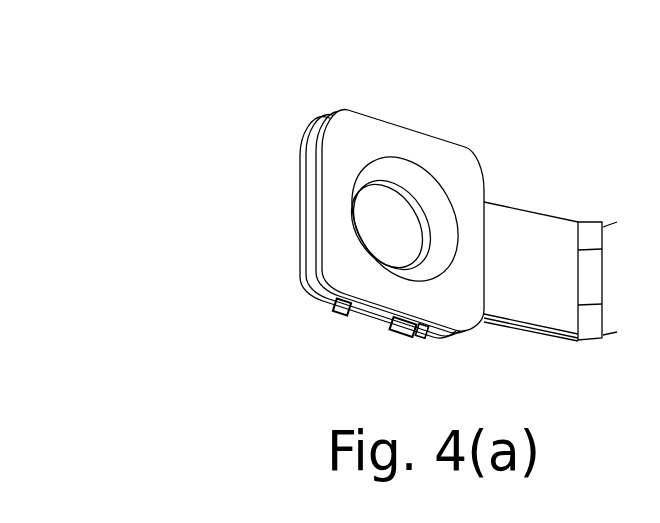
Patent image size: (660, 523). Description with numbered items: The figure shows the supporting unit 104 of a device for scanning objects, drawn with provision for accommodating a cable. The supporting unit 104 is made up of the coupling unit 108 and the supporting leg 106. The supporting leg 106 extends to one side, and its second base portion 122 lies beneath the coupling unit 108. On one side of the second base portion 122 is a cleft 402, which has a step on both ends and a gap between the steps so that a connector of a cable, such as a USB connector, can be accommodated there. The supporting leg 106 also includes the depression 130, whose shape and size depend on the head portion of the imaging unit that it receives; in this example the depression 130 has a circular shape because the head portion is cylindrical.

The supporting unit 104 is at (545, 165).
The supporting leg 106 is at (522, 330).
The coupling unit 108 is at (322, 120).
The second base portion 122 is at (306, 316).
The depression 130 is at (393, 235).
The cleft 402 is at (352, 335).